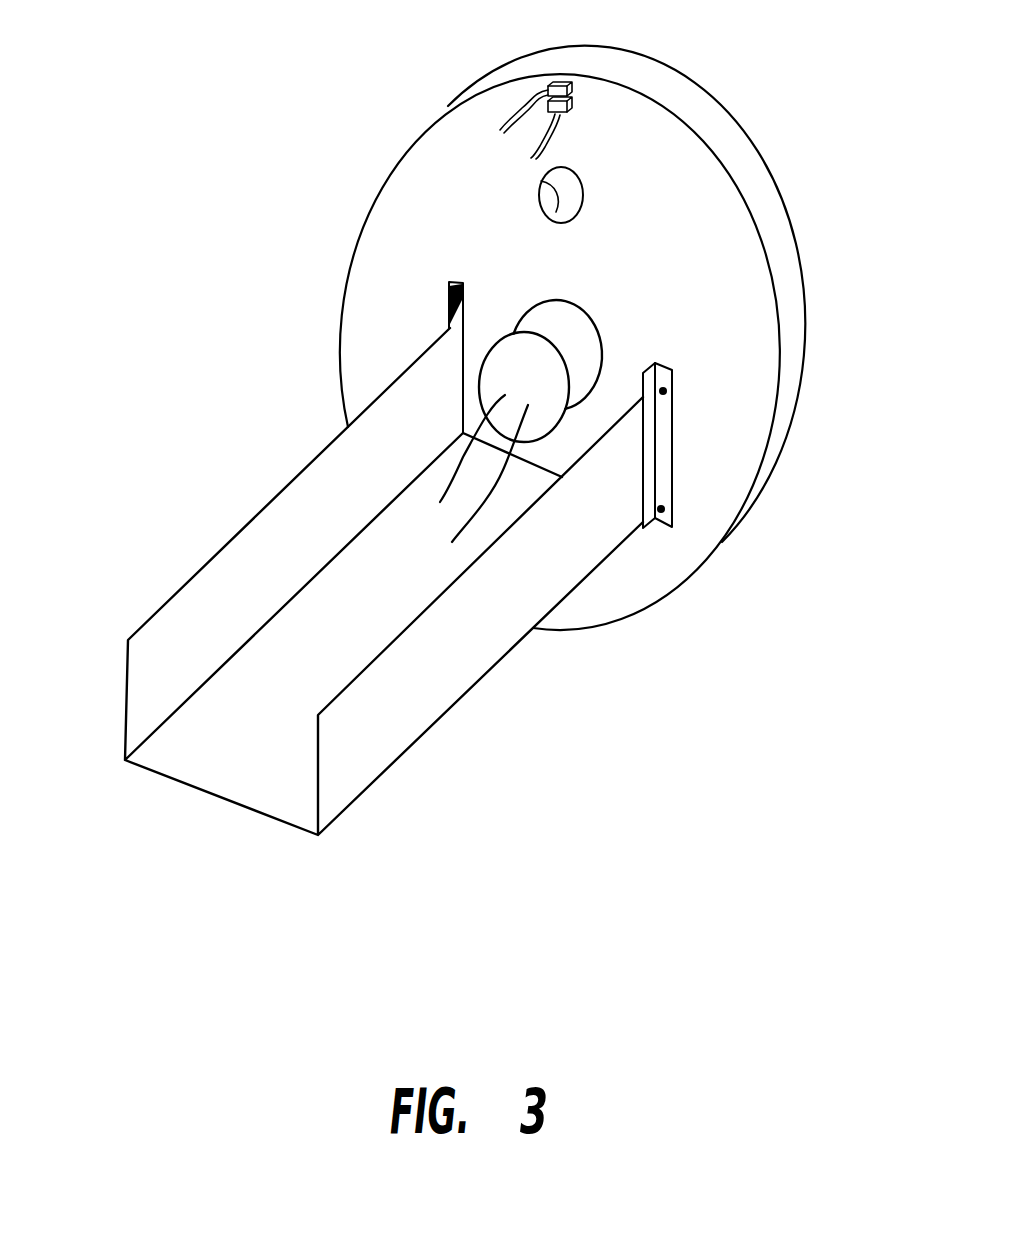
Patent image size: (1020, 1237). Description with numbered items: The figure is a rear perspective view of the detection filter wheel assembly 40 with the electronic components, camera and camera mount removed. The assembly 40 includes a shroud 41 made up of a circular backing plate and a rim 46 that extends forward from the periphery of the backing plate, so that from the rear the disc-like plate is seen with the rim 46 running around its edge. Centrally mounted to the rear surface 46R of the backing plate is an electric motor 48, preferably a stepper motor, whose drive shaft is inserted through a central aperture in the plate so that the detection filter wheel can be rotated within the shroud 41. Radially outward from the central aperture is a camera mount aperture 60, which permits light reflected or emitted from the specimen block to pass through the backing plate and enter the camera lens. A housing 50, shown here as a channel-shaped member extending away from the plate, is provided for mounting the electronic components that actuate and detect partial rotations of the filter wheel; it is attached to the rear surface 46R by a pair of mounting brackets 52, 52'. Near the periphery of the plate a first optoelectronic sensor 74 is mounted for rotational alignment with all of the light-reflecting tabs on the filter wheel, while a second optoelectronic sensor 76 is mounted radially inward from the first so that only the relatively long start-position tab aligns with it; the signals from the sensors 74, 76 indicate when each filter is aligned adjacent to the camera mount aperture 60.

The detection filter wheel assembly 40 is at (176, 539).
The shroud 41 is at (410, 150).
The rim 46 is at (392, 292).
The rear surface 46R is at (680, 248).
The electric motor 48 is at (578, 342).
The housing 50 is at (295, 678).
The mounting bracket 52 is at (350, 363).
The mounting bracket 52' is at (731, 465).
The camera mount aperture 60 is at (547, 212).
The first optoelectronic sensor 74 is at (573, 88).
The second optoelectronic sensor 76 is at (574, 114).